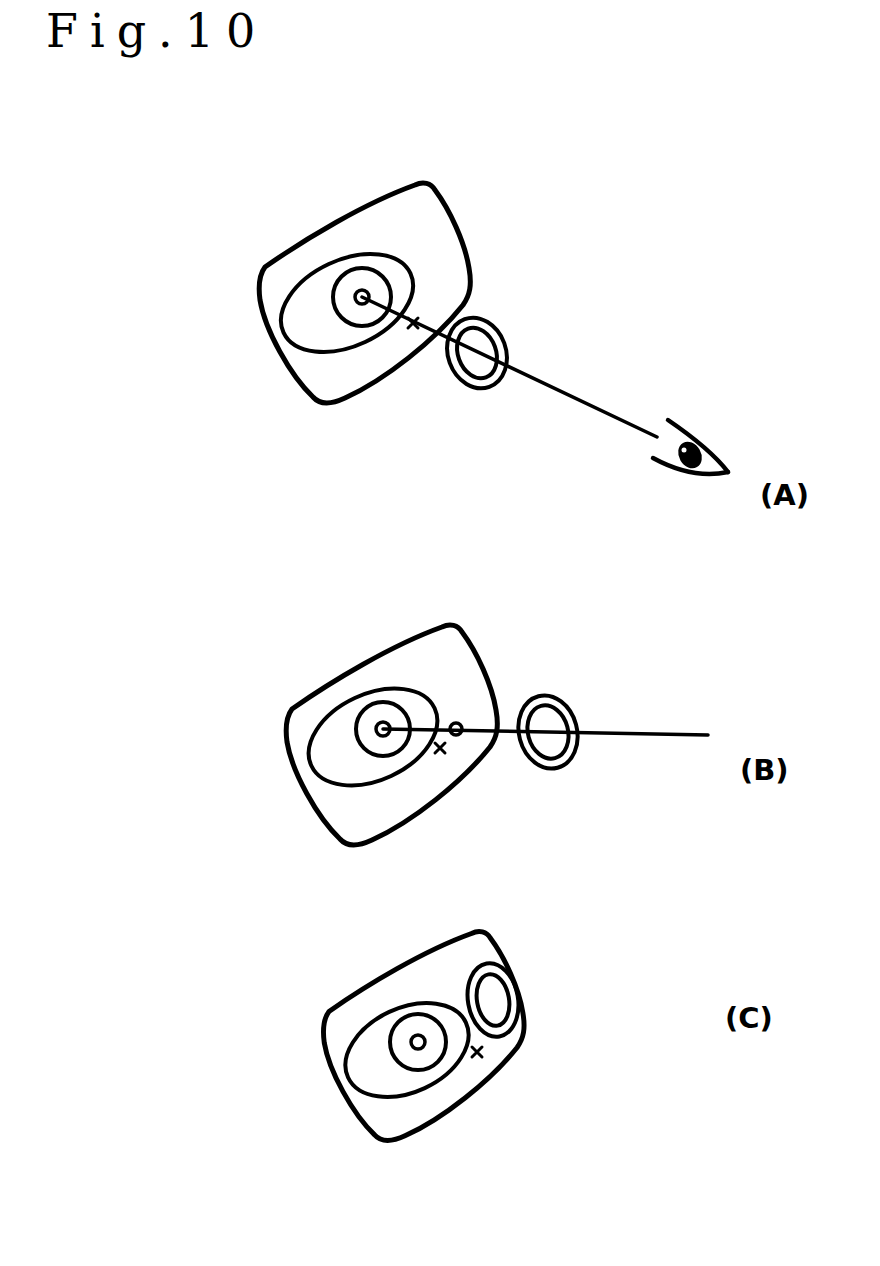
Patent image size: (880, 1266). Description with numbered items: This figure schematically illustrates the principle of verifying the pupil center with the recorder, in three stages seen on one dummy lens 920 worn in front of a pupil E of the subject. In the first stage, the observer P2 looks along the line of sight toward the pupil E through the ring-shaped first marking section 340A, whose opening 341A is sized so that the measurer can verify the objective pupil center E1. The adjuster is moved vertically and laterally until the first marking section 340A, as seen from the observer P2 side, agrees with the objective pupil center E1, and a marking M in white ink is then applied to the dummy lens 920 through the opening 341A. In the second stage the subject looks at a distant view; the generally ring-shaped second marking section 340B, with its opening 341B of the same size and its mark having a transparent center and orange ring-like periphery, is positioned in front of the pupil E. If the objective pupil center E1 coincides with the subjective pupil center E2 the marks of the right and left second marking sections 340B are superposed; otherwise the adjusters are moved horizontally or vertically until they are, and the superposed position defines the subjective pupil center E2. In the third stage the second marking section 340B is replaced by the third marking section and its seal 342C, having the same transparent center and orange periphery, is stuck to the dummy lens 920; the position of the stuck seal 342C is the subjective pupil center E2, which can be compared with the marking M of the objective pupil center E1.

The dummy lens 920 is at (293, 253).
The pupil E is at (297, 352).
The marking M is at (405, 332).
The objective pupil center E1 is at (587, 404).
The subjective pupil center E2 is at (460, 720).
The observer P2 is at (703, 427).
The first marking section 340A is at (508, 327).
The opening 341A is at (473, 388).
The second marking section 340B is at (572, 700).
The opening 341B is at (555, 757).
The seal 342C is at (582, 947).